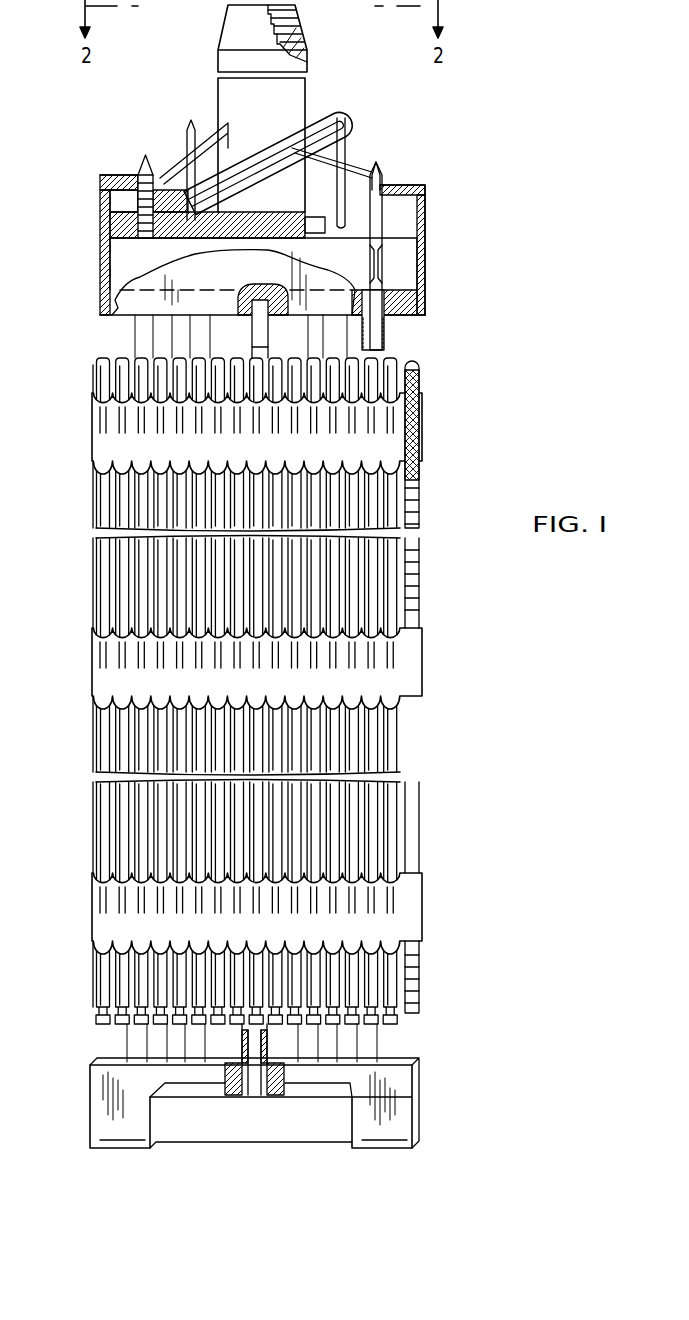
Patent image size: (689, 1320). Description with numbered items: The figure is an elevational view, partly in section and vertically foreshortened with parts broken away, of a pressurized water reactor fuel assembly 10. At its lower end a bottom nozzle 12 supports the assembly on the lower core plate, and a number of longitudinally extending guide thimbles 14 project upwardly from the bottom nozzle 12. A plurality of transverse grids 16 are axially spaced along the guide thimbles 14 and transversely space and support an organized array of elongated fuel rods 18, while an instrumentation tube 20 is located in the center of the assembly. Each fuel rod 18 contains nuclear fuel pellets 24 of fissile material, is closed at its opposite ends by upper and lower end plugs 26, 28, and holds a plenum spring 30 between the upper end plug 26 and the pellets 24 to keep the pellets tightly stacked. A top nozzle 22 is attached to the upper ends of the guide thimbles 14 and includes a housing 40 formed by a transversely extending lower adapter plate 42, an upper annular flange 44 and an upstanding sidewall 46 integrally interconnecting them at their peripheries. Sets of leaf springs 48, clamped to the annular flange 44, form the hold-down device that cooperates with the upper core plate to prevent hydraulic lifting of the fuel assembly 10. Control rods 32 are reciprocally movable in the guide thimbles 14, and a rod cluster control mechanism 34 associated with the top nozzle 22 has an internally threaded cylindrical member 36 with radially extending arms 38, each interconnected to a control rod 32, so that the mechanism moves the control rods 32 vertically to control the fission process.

The fuel assembly 10 is at (490, 383).
The bottom nozzle 12 is at (420, 1112).
The guide thimbles 14 is at (388, 348).
The transverse grids 16 is at (95, 434).
The fuel rods 18 is at (417, 455).
The instrumentation tube 20 is at (250, 1092).
The top nozzle 22 is at (437, 198).
The nuclear fuel pellets 24 is at (422, 545).
The upper end plug 26 is at (420, 367).
The lower end plug 28 is at (422, 1012).
The plenum spring 30 is at (422, 416).
The control rods 32 is at (383, 300).
The rod cluster control mechanism 34 is at (306, 96).
The internally threaded cylindrical member 36 is at (290, 32).
The arms 38 is at (184, 150).
The housing 40 is at (427, 239).
The lower adapter plate 42 is at (125, 308).
The upper annular flange 44 is at (118, 224).
The sidewall 46 is at (100, 268).
The leaf springs 48 is at (350, 123).